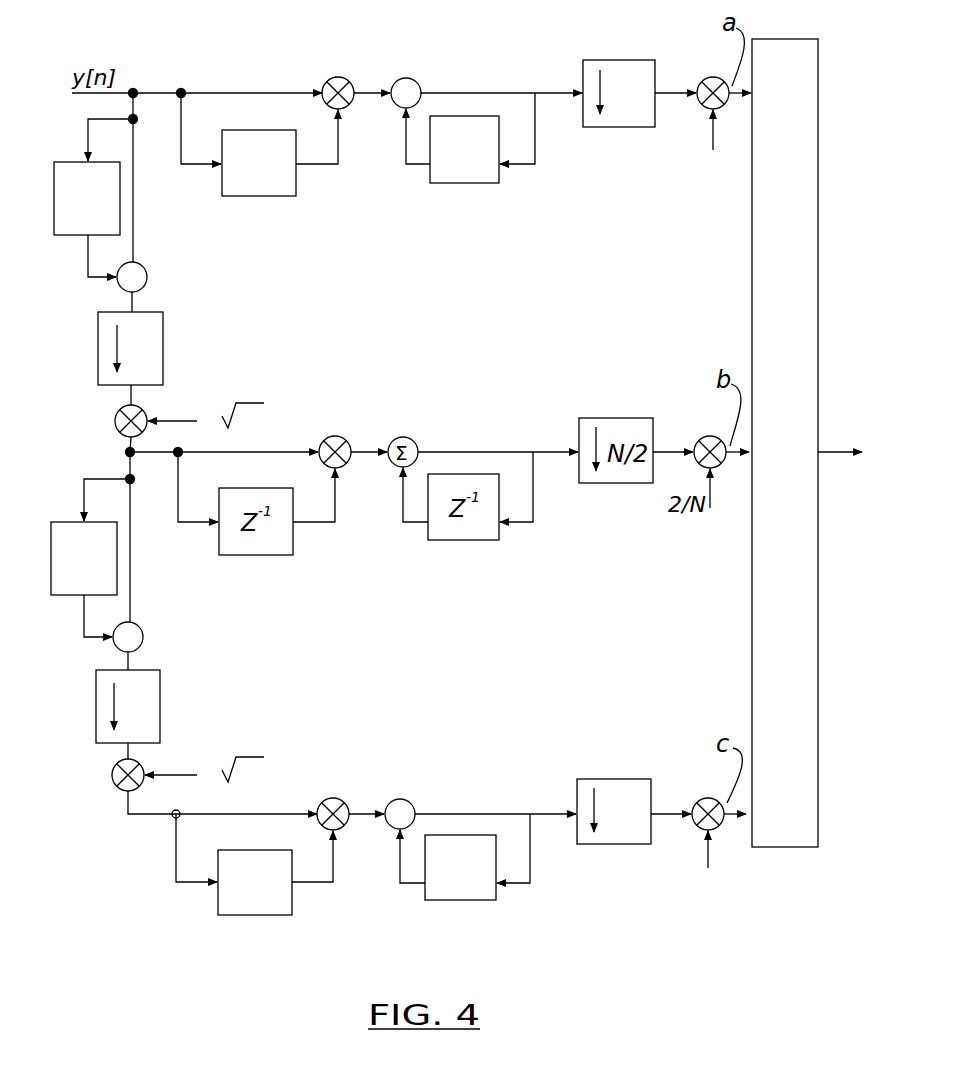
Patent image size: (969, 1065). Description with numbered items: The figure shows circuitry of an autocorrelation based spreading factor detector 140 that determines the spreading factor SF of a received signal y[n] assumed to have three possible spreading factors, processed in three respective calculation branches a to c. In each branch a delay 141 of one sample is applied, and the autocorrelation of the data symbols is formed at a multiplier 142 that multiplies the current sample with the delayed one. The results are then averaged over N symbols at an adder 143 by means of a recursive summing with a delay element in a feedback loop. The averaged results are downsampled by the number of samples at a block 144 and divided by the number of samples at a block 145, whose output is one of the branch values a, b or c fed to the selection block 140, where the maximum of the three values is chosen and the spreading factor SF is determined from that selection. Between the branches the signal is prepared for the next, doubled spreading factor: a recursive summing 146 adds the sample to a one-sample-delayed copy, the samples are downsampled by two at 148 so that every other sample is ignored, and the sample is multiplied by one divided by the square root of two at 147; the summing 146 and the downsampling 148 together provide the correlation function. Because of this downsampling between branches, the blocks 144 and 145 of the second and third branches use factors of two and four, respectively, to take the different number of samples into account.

The spreading factor detector / selection block 140 is at (783, 200).
The delay 141 is at (273, 130).
The multiplier 142 is at (330, 80).
The adder 143 is at (414, 82).
The downsampling block 144 is at (583, 77).
The division block 145 is at (712, 78).
The recursive summing 146 is at (65, 237).
The multiplier by one over root two 147 is at (115, 421).
The downsampling by two 148 is at (103, 345).